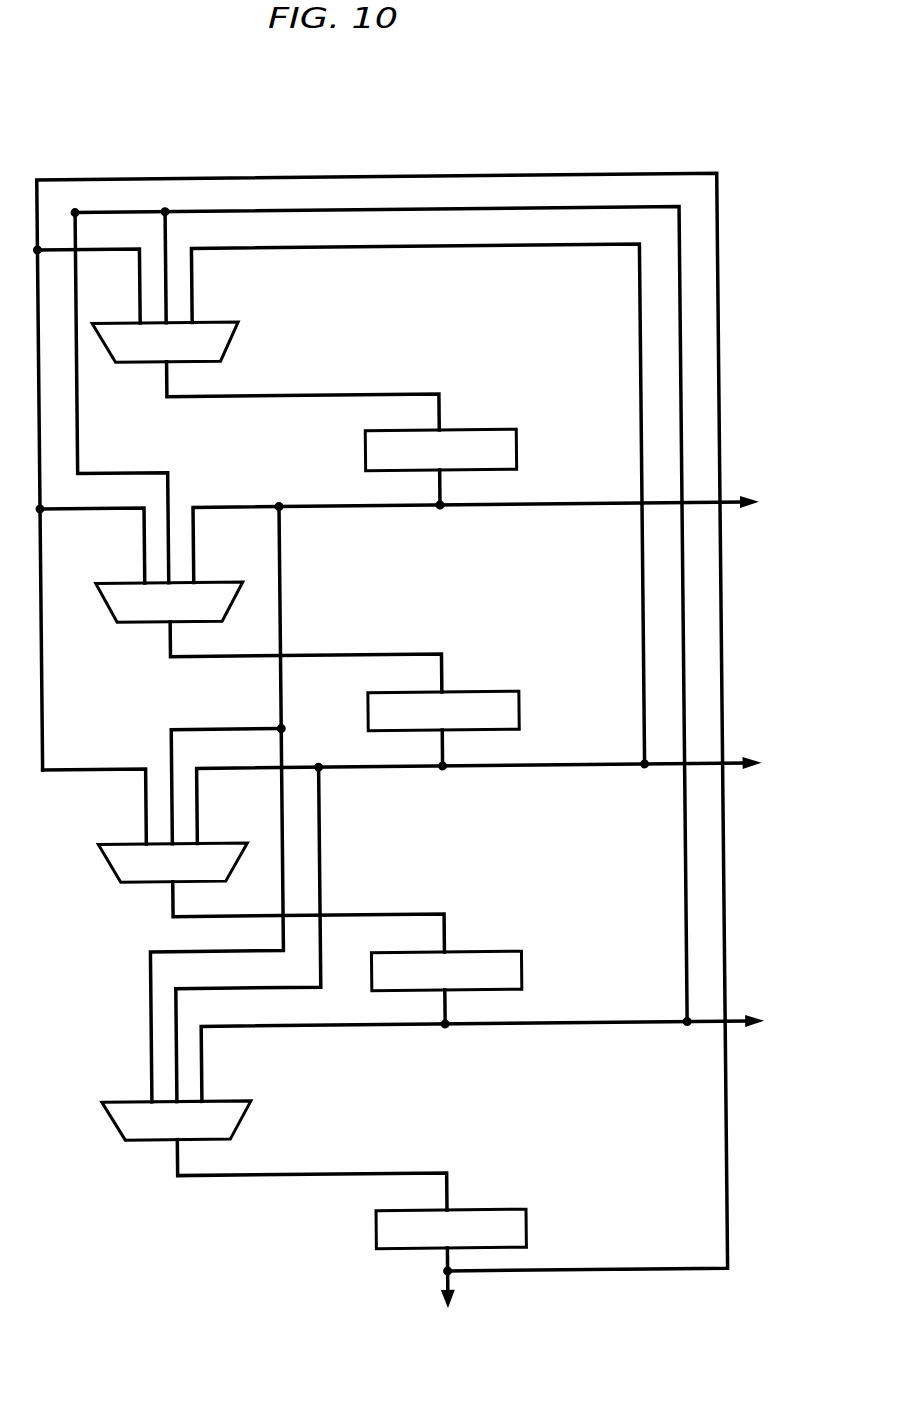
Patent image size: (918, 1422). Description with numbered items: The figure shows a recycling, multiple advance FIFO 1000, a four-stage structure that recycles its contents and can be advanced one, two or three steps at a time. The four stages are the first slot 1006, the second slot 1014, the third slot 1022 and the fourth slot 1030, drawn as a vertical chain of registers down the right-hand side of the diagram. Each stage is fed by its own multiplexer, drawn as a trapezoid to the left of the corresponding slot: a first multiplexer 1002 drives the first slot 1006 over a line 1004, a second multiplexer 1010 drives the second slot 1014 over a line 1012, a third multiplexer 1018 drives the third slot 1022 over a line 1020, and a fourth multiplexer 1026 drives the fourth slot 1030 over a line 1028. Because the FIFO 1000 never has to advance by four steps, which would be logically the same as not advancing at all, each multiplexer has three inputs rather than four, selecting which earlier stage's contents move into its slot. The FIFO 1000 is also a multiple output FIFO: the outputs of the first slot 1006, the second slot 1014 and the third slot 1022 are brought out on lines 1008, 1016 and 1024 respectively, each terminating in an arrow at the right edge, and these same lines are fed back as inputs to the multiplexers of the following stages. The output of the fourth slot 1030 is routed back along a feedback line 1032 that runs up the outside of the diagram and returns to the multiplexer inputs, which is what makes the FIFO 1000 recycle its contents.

The recycling, multiple advance FIFO 1000 is at (500, 124).
The multiplexer MUX 1 1002 is at (237, 328).
The connection line from MUX 1 to SLOT 1 1004 is at (362, 392).
The slot 1 1006 is at (492, 429).
The first output bus line 1008 is at (545, 507).
The multiplexer MUX 2 1010 is at (135, 622).
The connection line from MUX 2 to SLOT 2 1012 is at (366, 653).
The slot 2 1014 is at (497, 691).
The second output bus line 1016 is at (565, 768).
The multiplexer MUX 3 1018 is at (100, 860).
The connection line from MUX 3 to SLOT 3 1020 is at (366, 913).
The slot 3 1022 is at (499, 951).
The third output bus line 1024 is at (572, 1026).
The multiplexer MUX 4 1026 is at (107, 1120).
The connection line from MUX 4 to SLOT 4 1028 is at (372, 1171).
The slot 4 1030 is at (507, 1209).
The feedback line from SLOT 4 output 1032 is at (573, 1273).